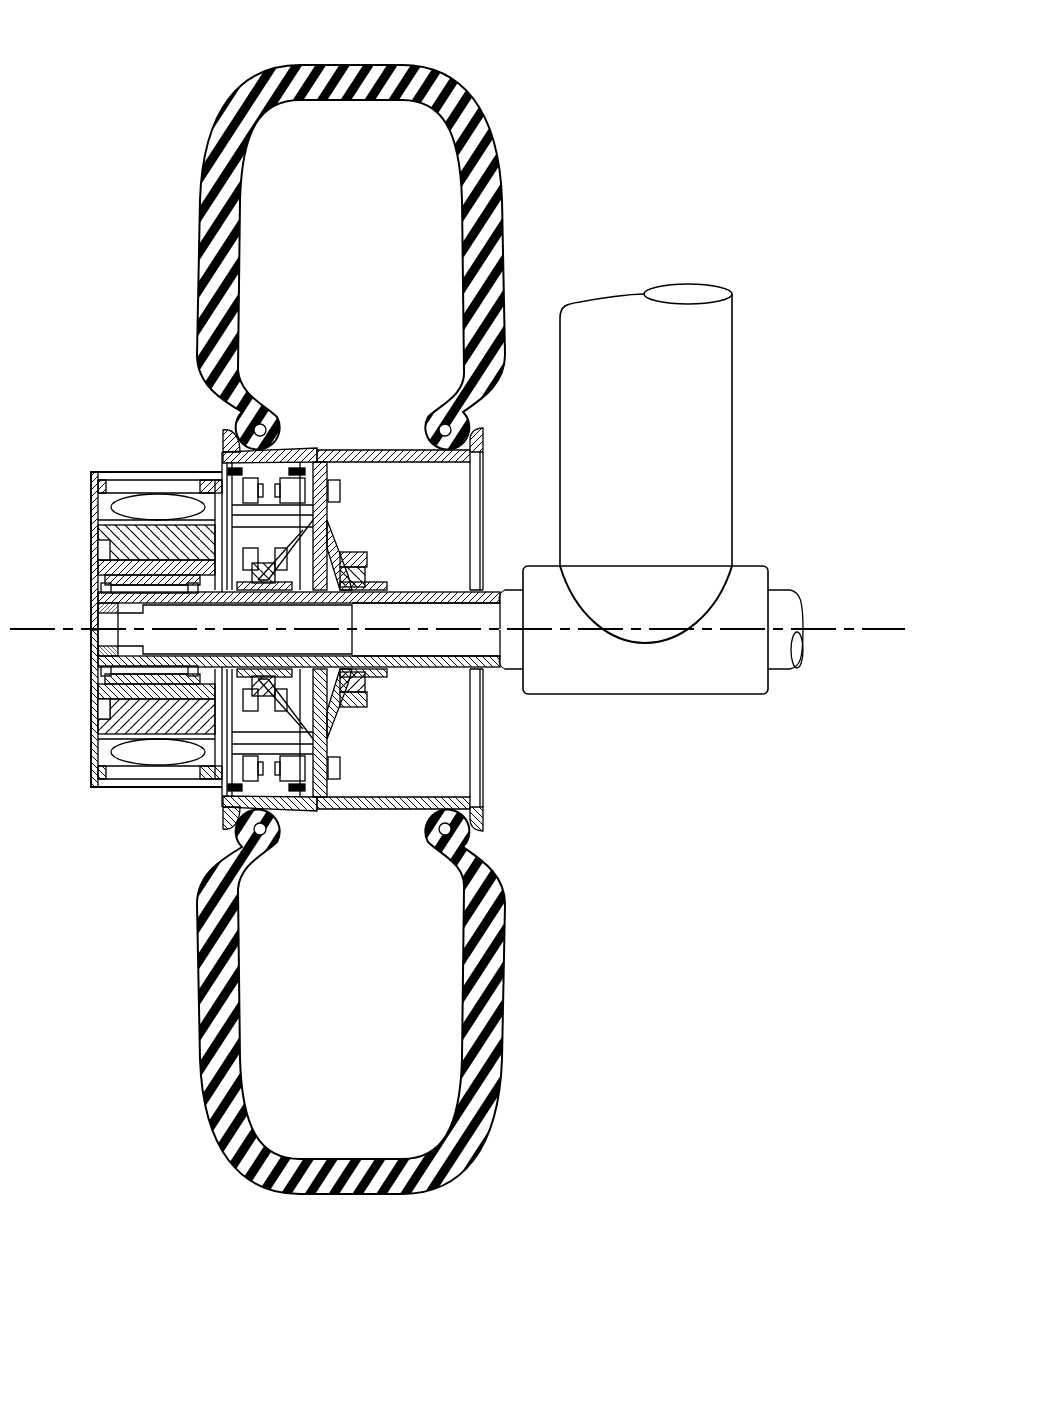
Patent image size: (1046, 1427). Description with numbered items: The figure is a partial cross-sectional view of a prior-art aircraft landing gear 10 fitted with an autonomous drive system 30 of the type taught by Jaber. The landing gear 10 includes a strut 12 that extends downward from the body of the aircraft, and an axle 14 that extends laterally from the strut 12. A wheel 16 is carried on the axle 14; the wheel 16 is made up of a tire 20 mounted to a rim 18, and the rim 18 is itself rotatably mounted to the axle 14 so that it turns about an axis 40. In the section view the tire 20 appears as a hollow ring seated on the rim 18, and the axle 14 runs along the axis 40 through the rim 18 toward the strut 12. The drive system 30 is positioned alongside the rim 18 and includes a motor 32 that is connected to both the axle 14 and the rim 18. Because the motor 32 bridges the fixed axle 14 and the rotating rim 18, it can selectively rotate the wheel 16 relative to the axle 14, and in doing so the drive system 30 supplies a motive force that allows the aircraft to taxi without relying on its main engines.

The landing gear 10 is at (724, 87).
The strut 12 is at (722, 418).
The axle 14 is at (512, 660).
The wheel 16 is at (526, 285).
The rim 18 is at (483, 768).
The tire 20 is at (242, 98).
The drive system 30 is at (146, 798).
The motor 32 is at (98, 700).
The axis 40 is at (880, 626).